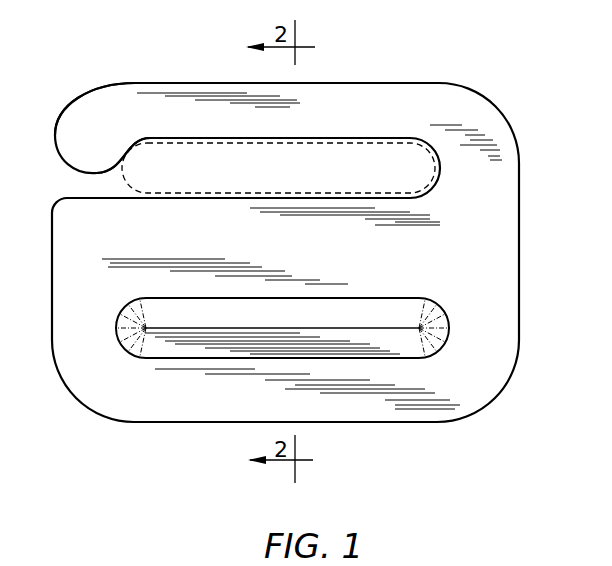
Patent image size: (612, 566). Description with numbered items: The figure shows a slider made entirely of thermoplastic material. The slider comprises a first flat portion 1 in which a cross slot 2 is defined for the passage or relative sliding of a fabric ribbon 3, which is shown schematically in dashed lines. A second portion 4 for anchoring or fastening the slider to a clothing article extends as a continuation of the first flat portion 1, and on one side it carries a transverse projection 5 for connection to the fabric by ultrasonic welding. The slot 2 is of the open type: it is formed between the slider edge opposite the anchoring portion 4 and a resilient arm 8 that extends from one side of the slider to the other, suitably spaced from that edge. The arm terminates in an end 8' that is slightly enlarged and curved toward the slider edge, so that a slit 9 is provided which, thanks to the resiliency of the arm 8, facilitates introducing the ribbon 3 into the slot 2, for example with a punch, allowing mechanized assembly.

The first flat portion 1 is at (522, 251).
The cross slot 2 is at (123, 160).
The fabric ribbon 3 is at (400, 152).
The second portion 4 is at (78, 373).
The transverse projection 5 is at (150, 347).
The resilient arm 8 is at (218, 81).
The end of resilient arm 8' is at (95, 105).
The slit 9 is at (70, 193).